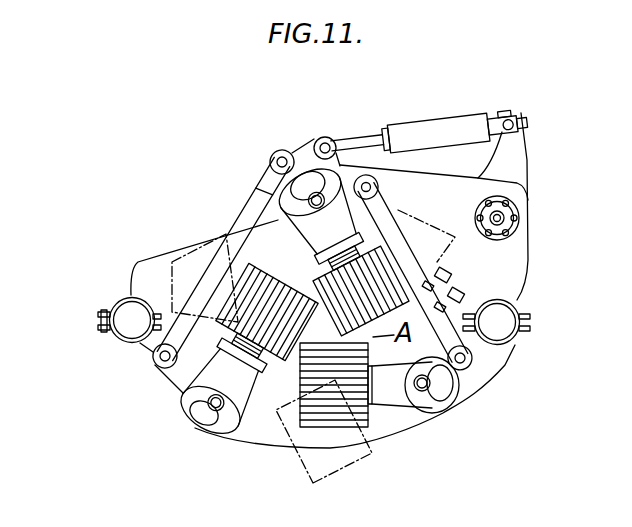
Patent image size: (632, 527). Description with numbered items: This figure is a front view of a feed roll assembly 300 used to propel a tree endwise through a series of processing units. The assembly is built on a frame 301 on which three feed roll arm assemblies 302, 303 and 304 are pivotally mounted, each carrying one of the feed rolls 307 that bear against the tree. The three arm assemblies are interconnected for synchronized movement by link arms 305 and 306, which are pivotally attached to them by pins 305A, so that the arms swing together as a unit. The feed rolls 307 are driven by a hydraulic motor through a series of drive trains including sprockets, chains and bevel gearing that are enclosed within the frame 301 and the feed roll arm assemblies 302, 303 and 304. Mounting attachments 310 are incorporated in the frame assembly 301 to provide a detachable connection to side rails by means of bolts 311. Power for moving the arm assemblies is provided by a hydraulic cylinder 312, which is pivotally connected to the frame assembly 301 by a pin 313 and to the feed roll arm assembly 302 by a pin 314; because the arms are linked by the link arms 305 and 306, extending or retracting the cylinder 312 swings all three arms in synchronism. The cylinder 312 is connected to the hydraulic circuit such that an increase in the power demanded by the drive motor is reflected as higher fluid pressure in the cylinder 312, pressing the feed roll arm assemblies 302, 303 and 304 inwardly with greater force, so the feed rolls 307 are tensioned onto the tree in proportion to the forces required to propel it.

The feed roll assembly 300 is at (437, 500).
The frame 301 is at (382, 437).
The feed roll arm assembly 302 is at (333, 227).
The feed roll arm assembly 303 is at (200, 401).
The feed roll arm assembly 304 is at (463, 378).
The link arm 305 is at (245, 220).
The pin 305A is at (280, 155).
The link arm 306 is at (422, 262).
The feed roll 307 is at (298, 430).
The mounting attachment 310 is at (130, 313).
The bolt 311 is at (98, 320).
The hydraulic cylinder 312 is at (432, 135).
The pin 313 is at (512, 117).
The pin 314 is at (328, 139).